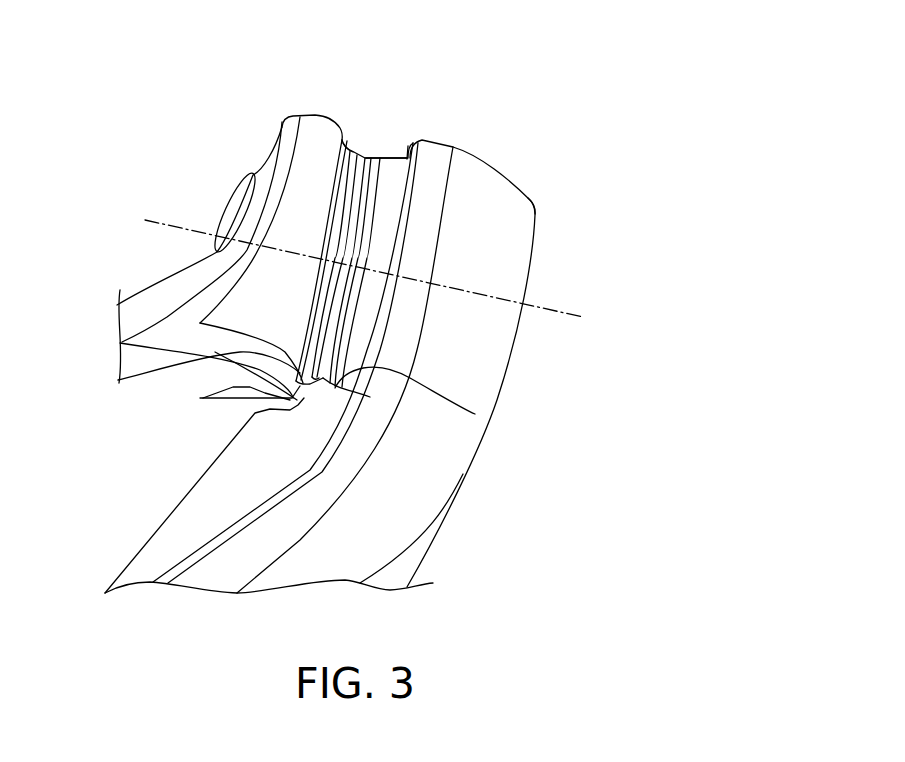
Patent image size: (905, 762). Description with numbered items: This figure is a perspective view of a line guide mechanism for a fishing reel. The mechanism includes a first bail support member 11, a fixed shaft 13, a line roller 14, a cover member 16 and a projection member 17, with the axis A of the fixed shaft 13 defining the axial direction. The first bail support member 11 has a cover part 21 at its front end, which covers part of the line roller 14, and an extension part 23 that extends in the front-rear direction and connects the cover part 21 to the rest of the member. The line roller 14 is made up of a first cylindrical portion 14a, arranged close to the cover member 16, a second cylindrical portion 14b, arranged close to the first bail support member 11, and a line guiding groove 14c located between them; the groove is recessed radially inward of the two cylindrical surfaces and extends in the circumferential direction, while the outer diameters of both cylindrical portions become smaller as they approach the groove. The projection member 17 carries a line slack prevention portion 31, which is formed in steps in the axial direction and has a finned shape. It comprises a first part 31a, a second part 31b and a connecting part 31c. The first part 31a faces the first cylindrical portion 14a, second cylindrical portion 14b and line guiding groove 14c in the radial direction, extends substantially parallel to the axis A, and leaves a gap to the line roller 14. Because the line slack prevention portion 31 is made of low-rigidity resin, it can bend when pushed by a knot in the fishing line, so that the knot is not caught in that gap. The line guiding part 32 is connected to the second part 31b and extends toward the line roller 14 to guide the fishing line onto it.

The first bail support member 11 is at (498, 163).
The fixed shaft 13 is at (245, 190).
The line roller 14 is at (403, 137).
The first cylindrical portion 14a is at (350, 150).
The second cylindrical portion 14b is at (393, 157).
The line guiding groove 14c is at (368, 160).
The cover member 16 is at (313, 127).
The projection member 17 is at (203, 465).
The cover part 21 is at (532, 202).
The extension part 23 is at (428, 555).
The line slack prevention portion 31 is at (197, 323).
The first part 31a is at (475, 414).
The second part 31b is at (200, 398).
The connecting part 31c is at (135, 348).
The line guiding part 32 is at (170, 523).
The axis A is at (568, 317).